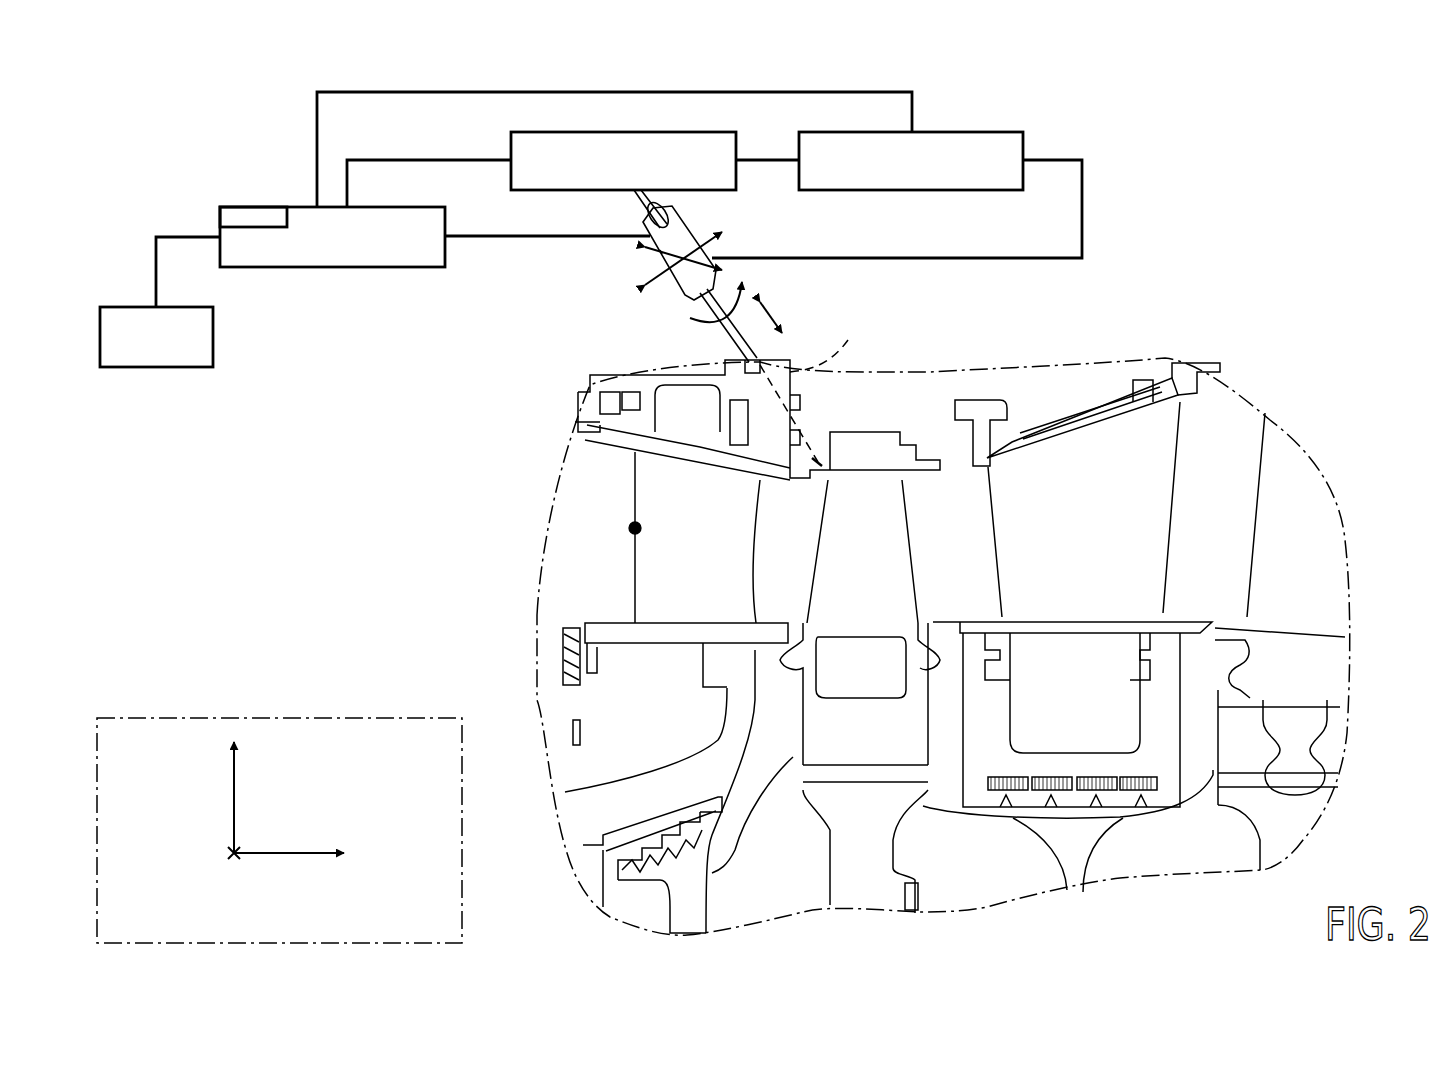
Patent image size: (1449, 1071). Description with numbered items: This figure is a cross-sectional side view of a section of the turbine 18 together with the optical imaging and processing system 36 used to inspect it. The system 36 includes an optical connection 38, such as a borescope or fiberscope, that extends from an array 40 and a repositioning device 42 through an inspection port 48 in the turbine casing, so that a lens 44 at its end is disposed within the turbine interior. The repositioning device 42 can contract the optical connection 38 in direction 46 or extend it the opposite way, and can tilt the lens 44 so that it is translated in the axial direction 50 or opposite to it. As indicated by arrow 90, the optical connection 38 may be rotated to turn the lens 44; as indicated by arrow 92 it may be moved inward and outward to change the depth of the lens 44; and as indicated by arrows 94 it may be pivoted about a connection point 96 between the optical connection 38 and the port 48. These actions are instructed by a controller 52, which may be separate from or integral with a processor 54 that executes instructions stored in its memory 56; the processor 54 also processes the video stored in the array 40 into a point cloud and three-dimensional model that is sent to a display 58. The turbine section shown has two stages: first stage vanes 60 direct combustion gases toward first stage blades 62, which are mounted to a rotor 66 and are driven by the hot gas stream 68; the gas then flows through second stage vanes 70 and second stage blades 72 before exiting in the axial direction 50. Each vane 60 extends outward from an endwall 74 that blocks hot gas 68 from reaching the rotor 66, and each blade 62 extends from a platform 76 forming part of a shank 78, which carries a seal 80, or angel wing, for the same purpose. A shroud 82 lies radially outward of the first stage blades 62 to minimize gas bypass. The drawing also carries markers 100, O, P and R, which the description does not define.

The turbine 18 is at (530, 684).
The optical imaging and processing system 36 is at (1088, 110).
The optical connection 38 is at (726, 340).
The array 40 is at (518, 132).
The repositioning device 42 is at (661, 254).
The lens 44 is at (812, 465).
The direction 46 is at (233, 800).
The inspection port 48 is at (850, 338).
The axial direction 50 is at (283, 853).
The controller 52 is at (972, 132).
The processor 54 is at (330, 267).
The memory 56 is at (251, 207).
The display 58 is at (213, 340).
The first stage vanes 60 is at (712, 538).
The first stage blades 62 is at (886, 553).
The rotor 66 is at (860, 757).
The hot gas stream 68 is at (606, 538).
The second stage vanes 70 is at (1097, 528).
The second stage blades 72 is at (1314, 528).
The endwall 74 is at (777, 612).
The platform 76 is at (894, 626).
The shank 78 is at (810, 668).
The seal 80 is at (923, 630).
The shroud 82 is at (865, 462).
The arrow 90 is at (690, 318).
The arrow 92 is at (772, 318).
The arrows 94 is at (708, 247).
The connection point 96 is at (765, 356).
The origin 100 is at (233, 852).
The origin point O is at (642, 524).
The point P is at (820, 465).
The radius R is at (815, 468).